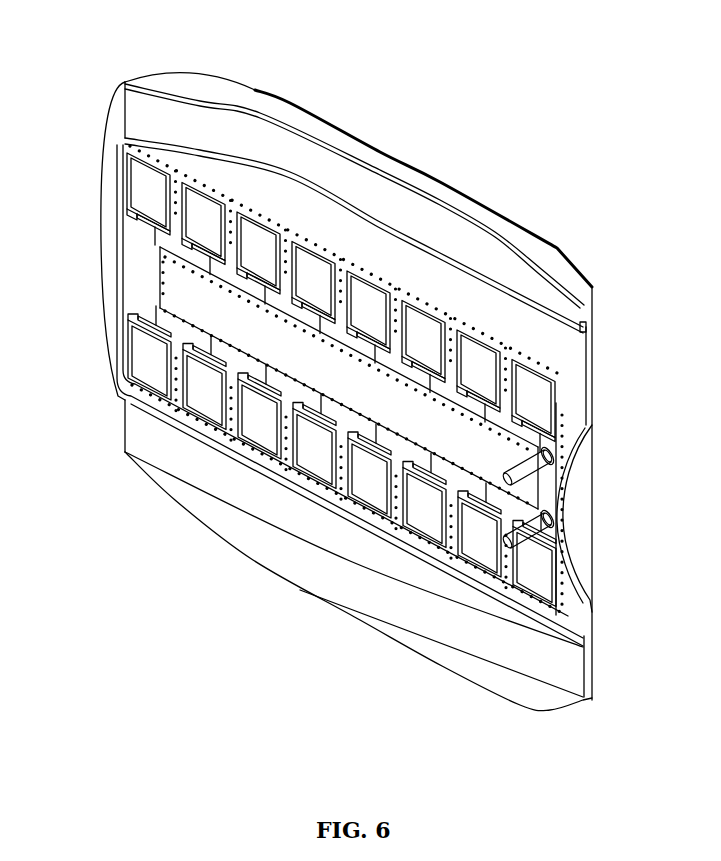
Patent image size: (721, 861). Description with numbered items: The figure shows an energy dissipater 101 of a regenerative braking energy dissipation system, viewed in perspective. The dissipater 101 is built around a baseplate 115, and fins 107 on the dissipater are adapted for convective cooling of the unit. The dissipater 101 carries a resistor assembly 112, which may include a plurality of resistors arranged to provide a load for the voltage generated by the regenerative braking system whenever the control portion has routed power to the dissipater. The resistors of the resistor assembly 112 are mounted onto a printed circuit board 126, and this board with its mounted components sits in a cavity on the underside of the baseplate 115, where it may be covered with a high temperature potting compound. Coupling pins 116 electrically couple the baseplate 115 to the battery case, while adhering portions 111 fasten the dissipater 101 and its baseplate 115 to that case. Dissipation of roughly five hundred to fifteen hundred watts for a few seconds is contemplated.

The dissipater 101 is at (593, 297).
The fins 107 is at (255, 90).
The adhering portions 111 is at (123, 110).
The resistor assembly 112 is at (125, 177).
The baseplate 115 is at (587, 407).
The coupling pins 116 is at (545, 463).
The printed circuit board (PCB) 126 is at (390, 523).